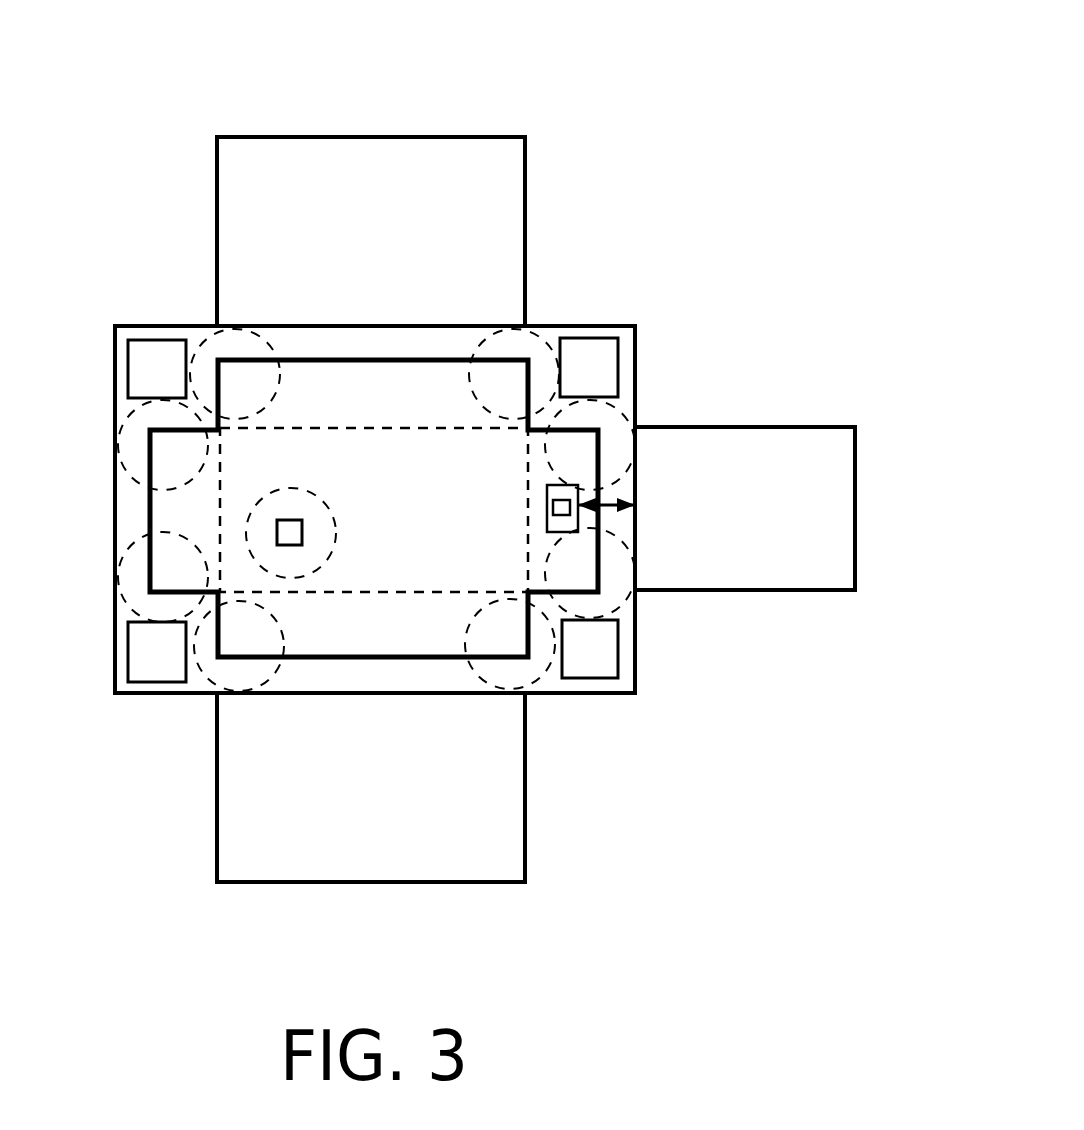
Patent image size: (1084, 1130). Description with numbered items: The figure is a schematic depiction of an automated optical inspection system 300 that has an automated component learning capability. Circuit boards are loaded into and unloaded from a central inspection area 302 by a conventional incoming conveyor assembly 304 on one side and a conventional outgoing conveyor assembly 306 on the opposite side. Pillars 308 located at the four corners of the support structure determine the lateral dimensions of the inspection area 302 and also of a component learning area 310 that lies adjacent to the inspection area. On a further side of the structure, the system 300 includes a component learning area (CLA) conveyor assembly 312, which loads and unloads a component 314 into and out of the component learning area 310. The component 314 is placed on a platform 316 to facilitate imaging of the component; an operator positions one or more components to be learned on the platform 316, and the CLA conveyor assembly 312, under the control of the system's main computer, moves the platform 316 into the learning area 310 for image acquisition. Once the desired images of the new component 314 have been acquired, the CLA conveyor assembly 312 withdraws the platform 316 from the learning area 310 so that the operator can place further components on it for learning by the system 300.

The automated optical inspection system 300 is at (468, 95).
The inspection area 302 is at (387, 483).
The incoming conveyor assembly 304 is at (525, 825).
The outgoing conveyor assembly 306 is at (525, 205).
The pillars 308 is at (165, 352).
The component learning area 310 is at (558, 455).
The component learning area (CLA) conveyor assembly 312 is at (855, 462).
The component 314 is at (556, 508).
The platform 316 is at (553, 490).